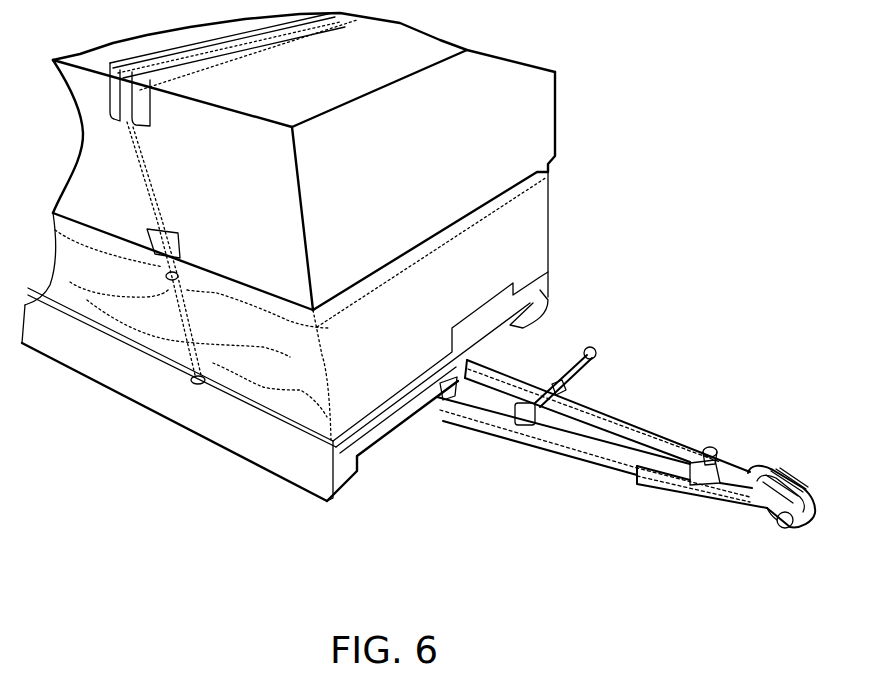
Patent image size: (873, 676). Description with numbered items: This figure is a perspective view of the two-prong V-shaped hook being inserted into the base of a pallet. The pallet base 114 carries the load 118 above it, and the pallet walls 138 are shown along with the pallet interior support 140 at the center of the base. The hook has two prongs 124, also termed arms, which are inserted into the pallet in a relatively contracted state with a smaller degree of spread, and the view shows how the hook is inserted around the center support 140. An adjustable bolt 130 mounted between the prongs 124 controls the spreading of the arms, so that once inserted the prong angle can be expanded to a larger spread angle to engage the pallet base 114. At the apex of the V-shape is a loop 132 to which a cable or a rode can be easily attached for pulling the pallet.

The load / cargo box 118 is at (525, 223).
The pallet base 114 is at (545, 287).
The pallet walls 138 is at (277, 468).
The pallet interior support 140 is at (437, 398).
The prongs 124 is at (477, 433).
The adjustable bolt 130 is at (583, 373).
The loop 132 is at (773, 513).